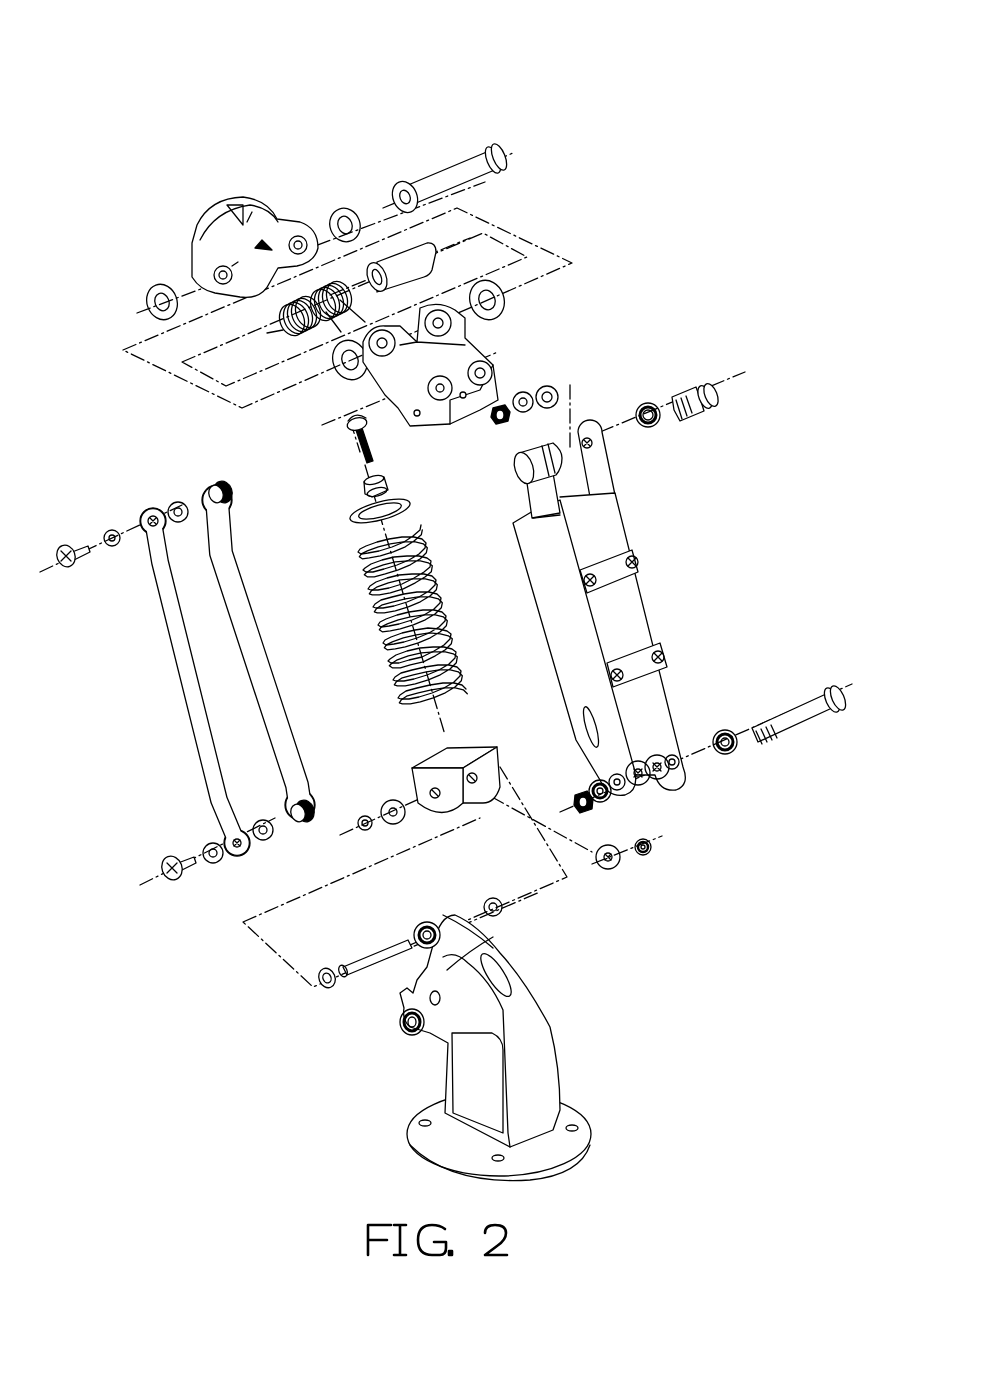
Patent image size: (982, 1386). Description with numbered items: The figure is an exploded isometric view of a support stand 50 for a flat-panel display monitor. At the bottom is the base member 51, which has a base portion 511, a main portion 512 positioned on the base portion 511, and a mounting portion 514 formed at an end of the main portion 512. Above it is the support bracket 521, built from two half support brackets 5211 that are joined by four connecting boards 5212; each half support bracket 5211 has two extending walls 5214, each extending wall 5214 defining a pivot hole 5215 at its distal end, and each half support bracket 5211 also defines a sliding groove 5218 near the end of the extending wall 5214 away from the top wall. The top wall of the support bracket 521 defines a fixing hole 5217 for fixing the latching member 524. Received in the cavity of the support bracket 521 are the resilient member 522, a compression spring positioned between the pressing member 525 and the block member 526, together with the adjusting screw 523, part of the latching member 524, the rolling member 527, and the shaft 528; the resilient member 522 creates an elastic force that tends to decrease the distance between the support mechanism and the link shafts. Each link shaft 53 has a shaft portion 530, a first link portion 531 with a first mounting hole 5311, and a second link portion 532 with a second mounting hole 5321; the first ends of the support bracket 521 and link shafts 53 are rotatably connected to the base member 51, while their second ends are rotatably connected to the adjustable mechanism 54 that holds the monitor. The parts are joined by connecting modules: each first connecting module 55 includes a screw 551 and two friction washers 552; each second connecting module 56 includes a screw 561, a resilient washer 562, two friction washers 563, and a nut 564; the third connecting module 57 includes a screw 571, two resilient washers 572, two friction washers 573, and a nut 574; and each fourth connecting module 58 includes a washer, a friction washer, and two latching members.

The support stand 50 is at (222, 76).
The base member 51 is at (580, 1080).
The base portion 511 is at (537, 1153).
The main portion 512 is at (537, 1024).
The mounting portion 514 is at (448, 953).
The support bracket 521 is at (645, 533).
The half support bracket 5211 is at (647, 621).
The connecting board 5212 is at (620, 577).
The extending wall 5214 is at (597, 458).
The pivot hole 5215 is at (588, 436).
The fixing hole 5217 is at (580, 487).
The sliding groove 5218 is at (584, 705).
The resilient member 522 is at (385, 606).
The adjusting screw 523 is at (362, 453).
The latching member 524 is at (399, 478).
The pressing member 525 is at (410, 504).
The block member 526 is at (465, 743).
The rolling member 527 is at (443, 920).
The shaft 528 is at (402, 942).
The link shaft 53 is at (146, 739).
The shaft portion 530 is at (182, 681).
The first link portion 531 is at (143, 536).
The first mounting hole 5311 is at (149, 512).
The second link portion 532 is at (222, 828).
The second mounting hole 5321 is at (238, 856).
The adjustable mechanism 54 is at (533, 207).
The first connecting module 55 is at (58, 574).
The screw 551 is at (84, 565).
The friction washer 552 is at (108, 523).
The second connecting module 56 is at (750, 372).
The screw 561 is at (711, 403).
The resilient washer 562 is at (658, 419).
The friction washer 563 is at (556, 384).
The nut 564 is at (503, 402).
The third connecting module 57 is at (564, 796).
The screw 571 is at (808, 697).
The resilient washer 572 is at (733, 754).
The friction washer 573 is at (662, 781).
The nut 574 is at (594, 804).
The fourth connecting module 58 is at (337, 838).